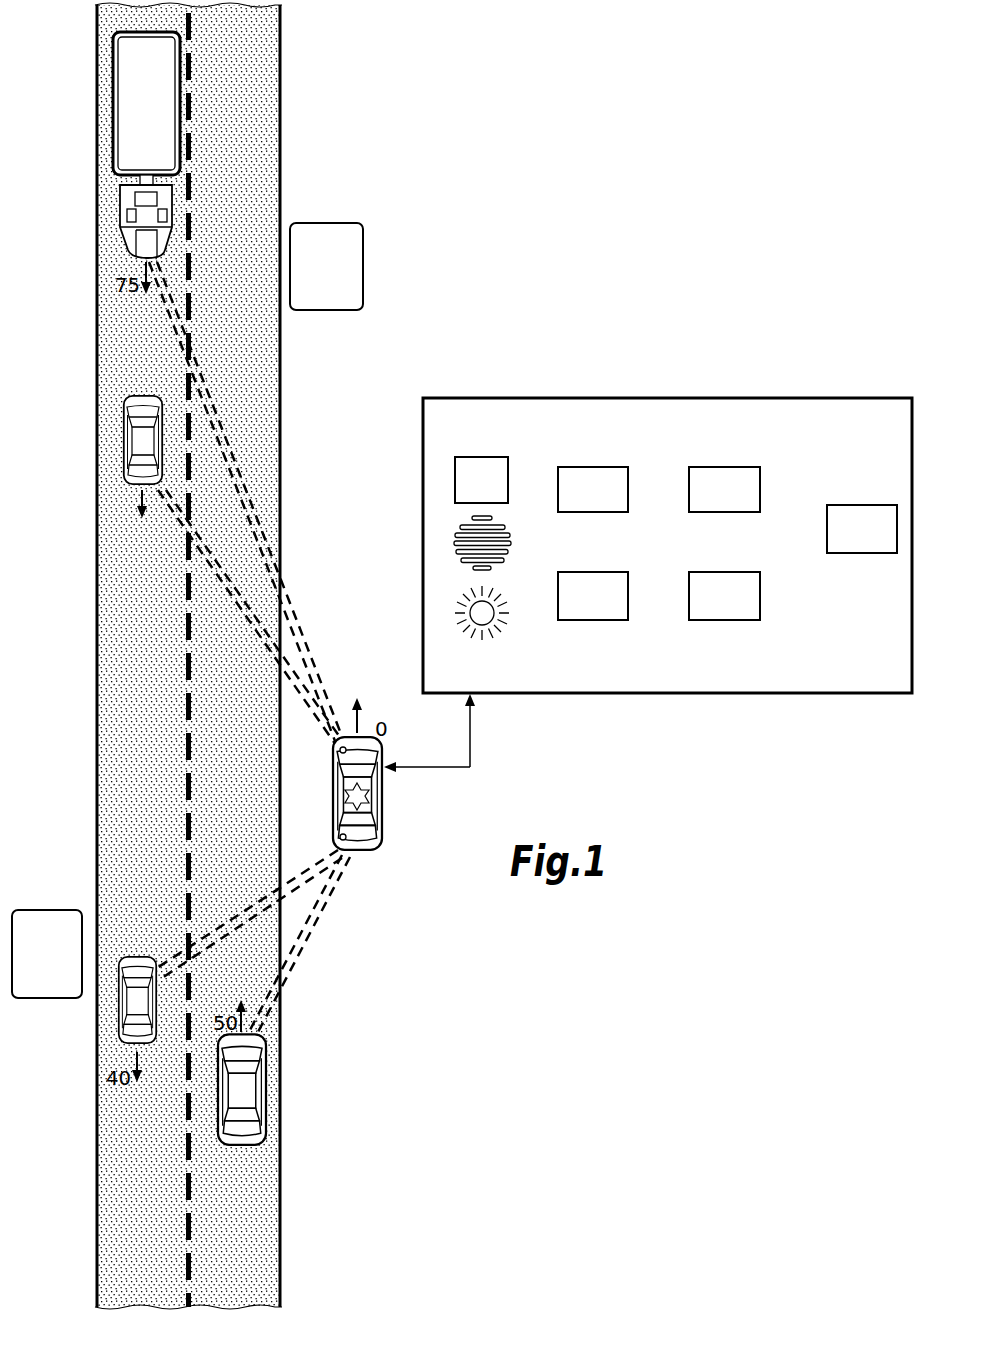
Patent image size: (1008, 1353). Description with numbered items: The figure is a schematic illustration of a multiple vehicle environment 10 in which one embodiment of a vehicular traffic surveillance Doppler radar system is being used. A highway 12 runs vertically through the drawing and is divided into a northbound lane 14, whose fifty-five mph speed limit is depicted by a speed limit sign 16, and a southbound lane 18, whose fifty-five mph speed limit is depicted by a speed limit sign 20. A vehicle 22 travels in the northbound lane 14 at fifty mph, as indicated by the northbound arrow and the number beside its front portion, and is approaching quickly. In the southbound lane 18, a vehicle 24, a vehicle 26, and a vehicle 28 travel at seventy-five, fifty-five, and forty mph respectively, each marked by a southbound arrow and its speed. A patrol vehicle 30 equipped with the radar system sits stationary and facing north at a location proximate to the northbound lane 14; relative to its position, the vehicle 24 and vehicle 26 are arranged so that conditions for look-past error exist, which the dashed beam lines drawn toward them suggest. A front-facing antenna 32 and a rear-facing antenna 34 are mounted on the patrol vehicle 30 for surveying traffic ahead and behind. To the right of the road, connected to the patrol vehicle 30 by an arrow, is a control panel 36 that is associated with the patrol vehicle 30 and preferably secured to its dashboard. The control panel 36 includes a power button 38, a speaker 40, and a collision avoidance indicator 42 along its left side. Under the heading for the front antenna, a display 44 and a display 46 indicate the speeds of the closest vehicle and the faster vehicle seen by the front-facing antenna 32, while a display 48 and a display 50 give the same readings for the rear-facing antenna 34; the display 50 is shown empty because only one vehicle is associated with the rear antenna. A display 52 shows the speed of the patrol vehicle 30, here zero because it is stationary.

The multiple vehicle environment 10 is at (658, 218).
The highway 12 is at (249, 656).
The northbound lane 14 is at (252, 222).
The speed limit sign 16 is at (363, 258).
The southbound lane 18 is at (154, 362).
The speed limit sign 20 is at (40, 910).
The vehicle 22 is at (265, 1098).
The vehicle 24 is at (113, 103).
The vehicle 26 is at (125, 440).
The vehicle 28 is at (125, 1012).
The patrol vehicle 30 is at (377, 793).
The front-facing antenna 32 is at (340, 750).
The rear-facing antenna 34 is at (340, 838).
The control panel 36 is at (693, 398).
The power button 38 is at (455, 478).
The speaker 40 is at (455, 545).
The collision avoidance indicator 42 is at (455, 613).
The display 44 is at (603, 513).
The display 46 is at (737, 513).
The display 48 is at (600, 572).
The display 50 is at (730, 572).
The display 52 is at (848, 505).